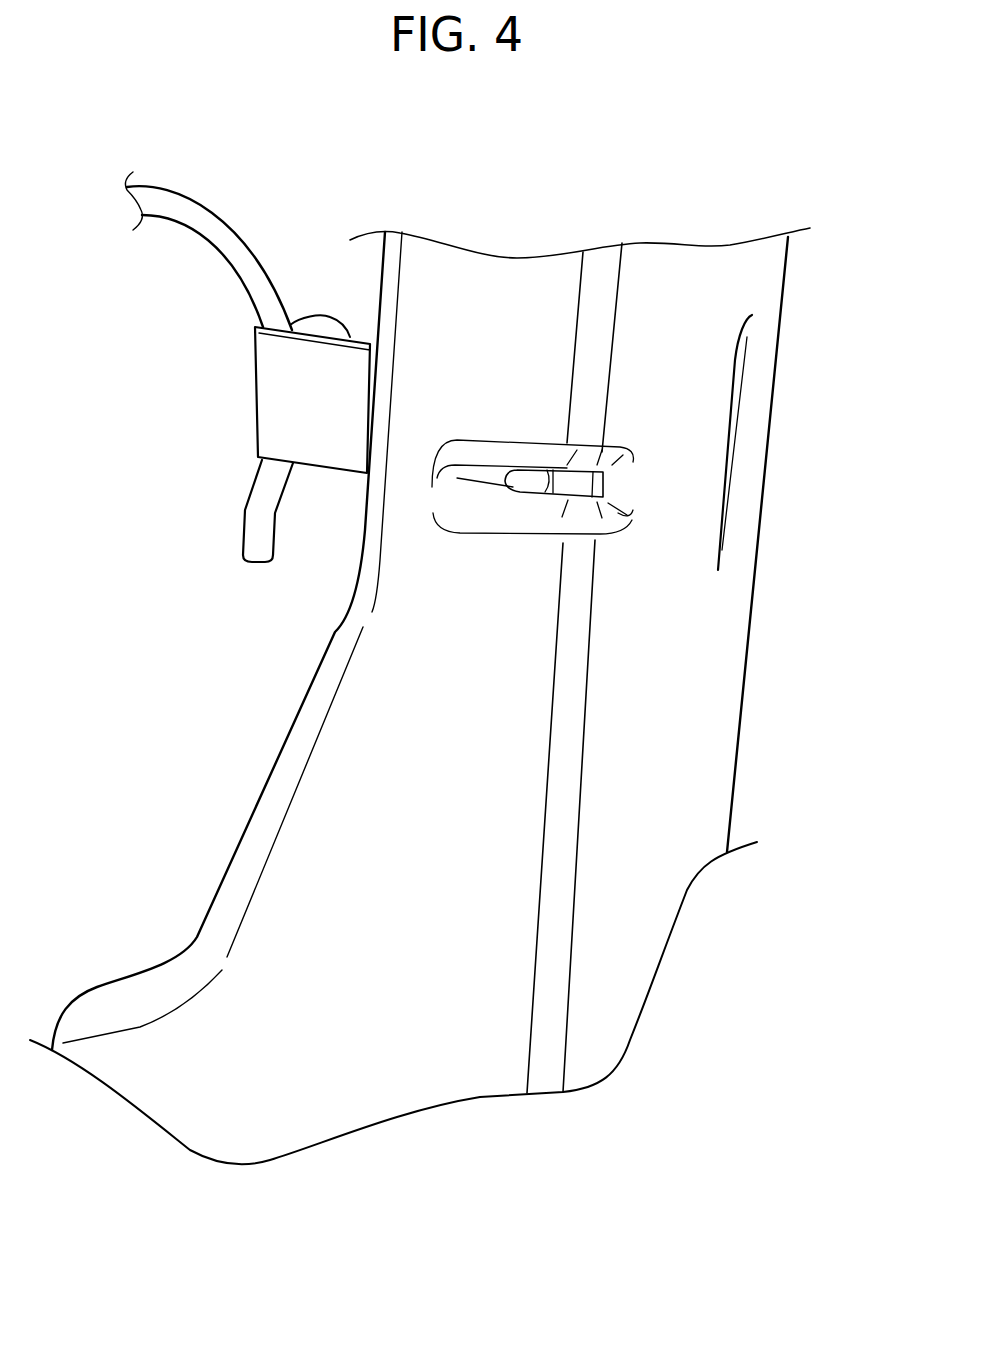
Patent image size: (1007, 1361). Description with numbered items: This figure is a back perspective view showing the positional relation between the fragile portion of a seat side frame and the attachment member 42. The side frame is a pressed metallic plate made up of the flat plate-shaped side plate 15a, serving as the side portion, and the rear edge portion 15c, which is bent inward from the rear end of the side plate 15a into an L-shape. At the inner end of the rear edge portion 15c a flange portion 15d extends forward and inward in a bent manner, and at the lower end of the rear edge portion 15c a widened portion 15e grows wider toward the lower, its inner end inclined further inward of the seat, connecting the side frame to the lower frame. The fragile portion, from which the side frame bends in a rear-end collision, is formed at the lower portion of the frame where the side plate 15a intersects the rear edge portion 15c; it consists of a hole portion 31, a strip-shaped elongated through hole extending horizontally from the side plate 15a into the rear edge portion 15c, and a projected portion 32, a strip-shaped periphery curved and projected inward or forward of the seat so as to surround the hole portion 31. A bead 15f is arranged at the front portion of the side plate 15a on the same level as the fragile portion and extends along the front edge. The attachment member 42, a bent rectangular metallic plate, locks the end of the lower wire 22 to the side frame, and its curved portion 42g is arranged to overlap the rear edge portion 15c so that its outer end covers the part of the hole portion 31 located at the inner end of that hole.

The side plate 15a is at (687, 290).
The rear edge portion 15c is at (477, 300).
The flange portion 15d is at (303, 735).
The widened portion 15e is at (303, 875).
The bead 15f is at (737, 415).
The lower wire 22 is at (215, 217).
The hole portion 31 is at (605, 482).
The projected portion 32 is at (620, 477).
The attachment member 42 is at (272, 402).
The curved portion 42g is at (530, 487).